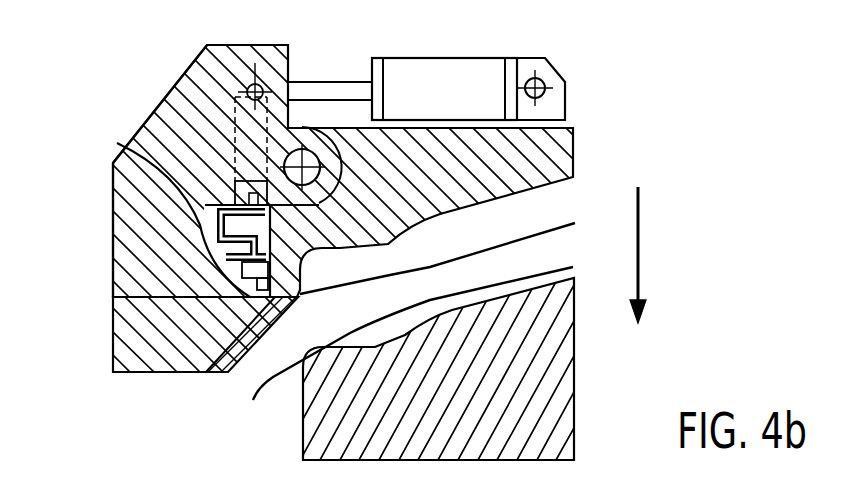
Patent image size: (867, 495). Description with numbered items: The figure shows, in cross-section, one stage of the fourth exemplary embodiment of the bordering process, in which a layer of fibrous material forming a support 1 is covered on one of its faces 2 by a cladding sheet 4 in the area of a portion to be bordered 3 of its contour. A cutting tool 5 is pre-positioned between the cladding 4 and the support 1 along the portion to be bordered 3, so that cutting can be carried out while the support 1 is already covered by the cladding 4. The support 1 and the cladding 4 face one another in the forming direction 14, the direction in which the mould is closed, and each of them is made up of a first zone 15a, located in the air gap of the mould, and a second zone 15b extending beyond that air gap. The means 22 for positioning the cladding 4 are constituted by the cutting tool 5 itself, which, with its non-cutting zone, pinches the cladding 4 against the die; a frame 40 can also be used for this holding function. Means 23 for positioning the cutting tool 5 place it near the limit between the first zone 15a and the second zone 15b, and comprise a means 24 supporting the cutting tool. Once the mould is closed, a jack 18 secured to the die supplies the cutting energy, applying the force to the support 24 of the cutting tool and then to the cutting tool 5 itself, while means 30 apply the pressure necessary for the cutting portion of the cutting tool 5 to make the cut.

The support 1 is at (573, 267).
The face 2 is at (430, 290).
The portion to be bordered 3 is at (286, 352).
The cladding sheet 4 is at (575, 223).
The cutting tool 5 is at (152, 340).
The forming direction 14 is at (640, 228).
The first zone 15a is at (343, 330).
The second zone 15b is at (210, 373).
The jack 18 is at (457, 77).
The means for positioning cladding 22 is at (100, 270).
The means for positioning cutting tool 23 is at (155, 88).
The means supporting cutting tool 24 is at (133, 190).
The means for applying pressure 30 is at (568, 60).
The frame 40 is at (133, 140).